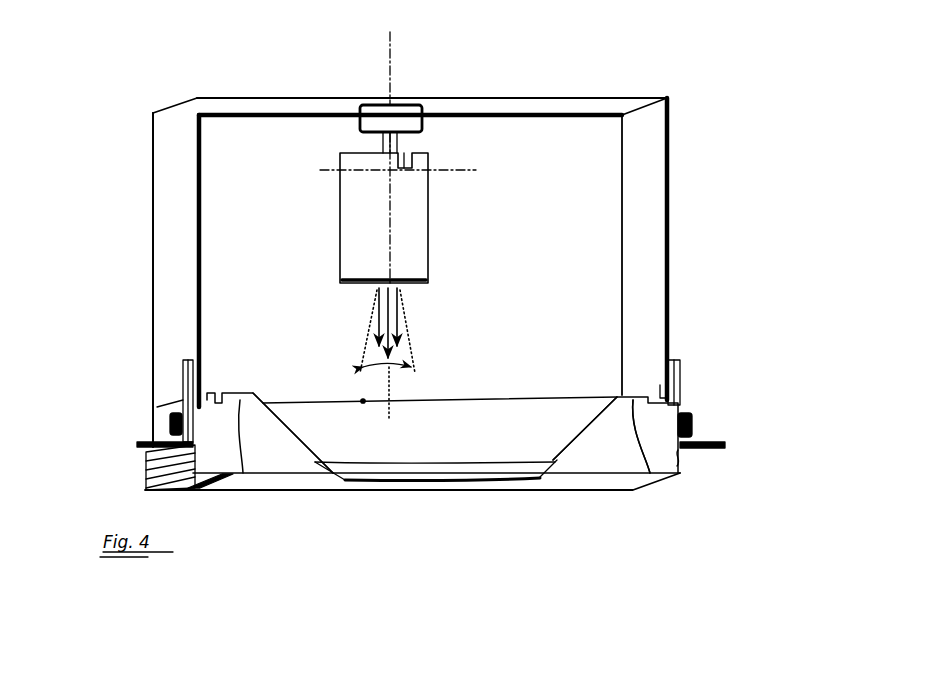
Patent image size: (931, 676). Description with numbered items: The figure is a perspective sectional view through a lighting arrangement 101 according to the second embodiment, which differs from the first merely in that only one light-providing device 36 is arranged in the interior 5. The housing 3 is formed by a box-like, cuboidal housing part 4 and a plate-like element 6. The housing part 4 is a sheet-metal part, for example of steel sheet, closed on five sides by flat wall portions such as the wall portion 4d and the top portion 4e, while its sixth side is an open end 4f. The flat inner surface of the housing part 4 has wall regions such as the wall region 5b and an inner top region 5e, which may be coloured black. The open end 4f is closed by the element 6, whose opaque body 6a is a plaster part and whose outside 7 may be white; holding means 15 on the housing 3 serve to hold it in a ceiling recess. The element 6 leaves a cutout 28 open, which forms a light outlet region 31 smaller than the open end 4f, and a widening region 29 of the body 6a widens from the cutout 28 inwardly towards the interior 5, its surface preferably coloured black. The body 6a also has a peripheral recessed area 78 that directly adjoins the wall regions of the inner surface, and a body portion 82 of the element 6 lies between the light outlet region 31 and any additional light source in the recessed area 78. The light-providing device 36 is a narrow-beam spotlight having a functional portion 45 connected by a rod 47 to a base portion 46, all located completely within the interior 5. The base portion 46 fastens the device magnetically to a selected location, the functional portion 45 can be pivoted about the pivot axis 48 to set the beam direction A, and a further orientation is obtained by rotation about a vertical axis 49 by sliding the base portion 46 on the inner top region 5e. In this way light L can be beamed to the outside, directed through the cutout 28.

The lighting arrangement 101 is at (690, 91).
The housing part 4 is at (658, 218).
The top portion 4e is at (281, 93).
The wall portion 4d is at (166, 178).
The open end 4f is at (150, 470).
The interior 5 is at (556, 252).
The wall region 5b is at (644, 160).
The inner top region 5e is at (498, 112).
The vertical axis 49 is at (394, 44).
The base portion 46 is at (387, 111).
The rod 47 is at (401, 142).
The functional portion 45 is at (441, 212).
The pivot axis 48 is at (478, 171).
The light-providing device 36 is at (353, 222).
The light L is at (398, 318).
The beam direction A is at (396, 390).
The housing 3 is at (668, 425).
The widening region 29 is at (294, 425).
The body portion 82 is at (243, 473).
The element 6 is at (598, 462).
The body 6a is at (629, 463).
The cutout 28 is at (390, 474).
The light outlet region 31 is at (444, 481).
The outside 7 is at (497, 493).
The recessed area 78 is at (205, 384).
The holding means 15 is at (156, 426).